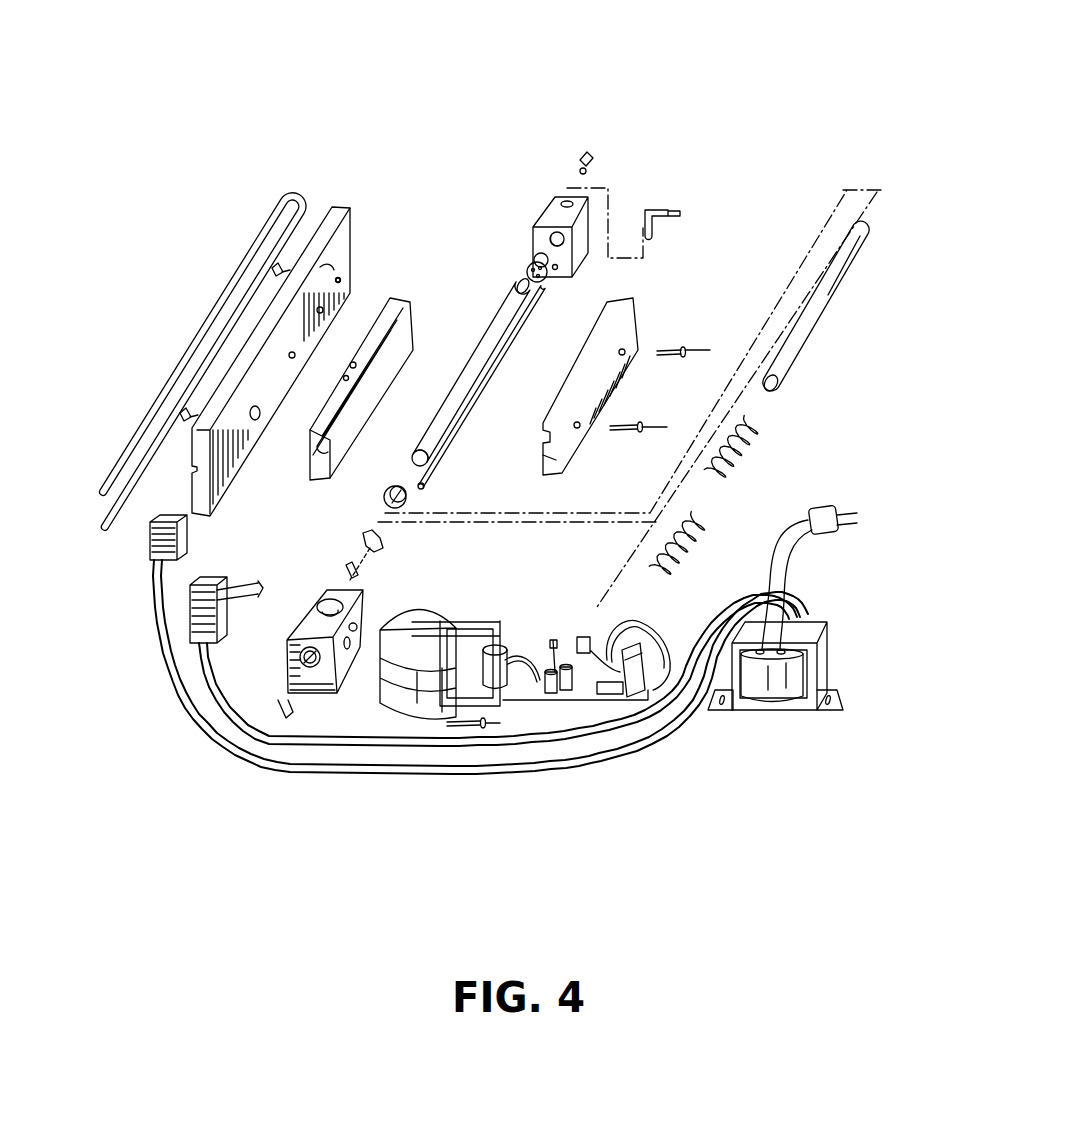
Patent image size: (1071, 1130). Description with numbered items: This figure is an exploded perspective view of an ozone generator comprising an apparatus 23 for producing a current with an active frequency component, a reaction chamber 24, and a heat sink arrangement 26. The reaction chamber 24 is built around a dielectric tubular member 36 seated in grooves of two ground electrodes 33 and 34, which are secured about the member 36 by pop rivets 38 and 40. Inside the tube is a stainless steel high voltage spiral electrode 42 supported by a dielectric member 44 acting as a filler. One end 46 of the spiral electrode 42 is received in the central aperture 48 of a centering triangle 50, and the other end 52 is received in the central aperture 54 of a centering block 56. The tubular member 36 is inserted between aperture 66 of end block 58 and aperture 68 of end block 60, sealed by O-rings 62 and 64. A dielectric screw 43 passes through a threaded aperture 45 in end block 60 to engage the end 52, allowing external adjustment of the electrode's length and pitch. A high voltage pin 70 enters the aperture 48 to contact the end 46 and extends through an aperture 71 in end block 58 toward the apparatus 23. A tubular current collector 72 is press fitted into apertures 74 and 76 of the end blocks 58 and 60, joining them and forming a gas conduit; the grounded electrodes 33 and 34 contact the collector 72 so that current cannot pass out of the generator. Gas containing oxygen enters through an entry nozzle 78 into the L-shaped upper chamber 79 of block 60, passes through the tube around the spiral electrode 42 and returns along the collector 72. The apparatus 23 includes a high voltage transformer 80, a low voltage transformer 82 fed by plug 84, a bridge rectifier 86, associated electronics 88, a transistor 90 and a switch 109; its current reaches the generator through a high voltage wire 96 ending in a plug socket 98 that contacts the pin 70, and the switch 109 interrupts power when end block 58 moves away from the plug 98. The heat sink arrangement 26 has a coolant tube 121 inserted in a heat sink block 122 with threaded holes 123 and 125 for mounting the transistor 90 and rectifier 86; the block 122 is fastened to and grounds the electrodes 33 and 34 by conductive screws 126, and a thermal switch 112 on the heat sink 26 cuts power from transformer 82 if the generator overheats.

The apparatus for producing a current 23 is at (209, 762).
The reaction chamber 24 is at (694, 102).
The heat sink arrangement 26 is at (328, 88).
The ground electrode 33 is at (393, 307).
The ground electrode 34 is at (637, 325).
The dielectric tubular member 36 is at (493, 343).
The pop rivet 38 is at (677, 340).
The pop rivet 40 is at (630, 425).
The high voltage spiral electrode 42 is at (740, 464).
The screw 43 is at (592, 150).
The dielectric member 44 is at (828, 297).
The threaded aperture 45 is at (560, 230).
The end of spiral electrode 46 is at (667, 562).
The central aperture 48 is at (380, 547).
The centering triangle 50 is at (363, 533).
The end of spiral electrode 52 is at (748, 425).
The central aperture 54 is at (547, 281).
The centering block 56 is at (525, 268).
The end block 58 is at (296, 620).
The end block 60 is at (550, 212).
The O-ring 62 is at (410, 500).
The O-ring 64 is at (532, 253).
The aperture 66 is at (318, 600).
The aperture 68 is at (537, 243).
The high voltage pin 70 is at (347, 563).
The aperture 71 is at (293, 663).
The current collector 72 is at (480, 398).
The aperture 74 is at (357, 633).
The aperture 76 is at (573, 275).
The entry nozzle 78 is at (653, 207).
The upper chamber 79 is at (588, 230).
The high voltage transformer 80 is at (427, 613).
The low voltage transformer 82 is at (790, 677).
The plug 84 is at (830, 512).
The bridge rectifier 86 is at (620, 693).
The associated electronics 88 is at (572, 698).
The transistor 90 is at (580, 637).
The high voltage wire 96 is at (360, 706).
The plug socket 98 is at (283, 700).
The switch 109 is at (190, 625).
The thermal switch 112 is at (150, 541).
The thermally conductive tube 121 is at (290, 197).
The heat sink block 122 is at (333, 207).
The threaded hole 123 is at (322, 268).
The threaded hole 125 is at (340, 280).
The conductive screws 126 is at (282, 268).